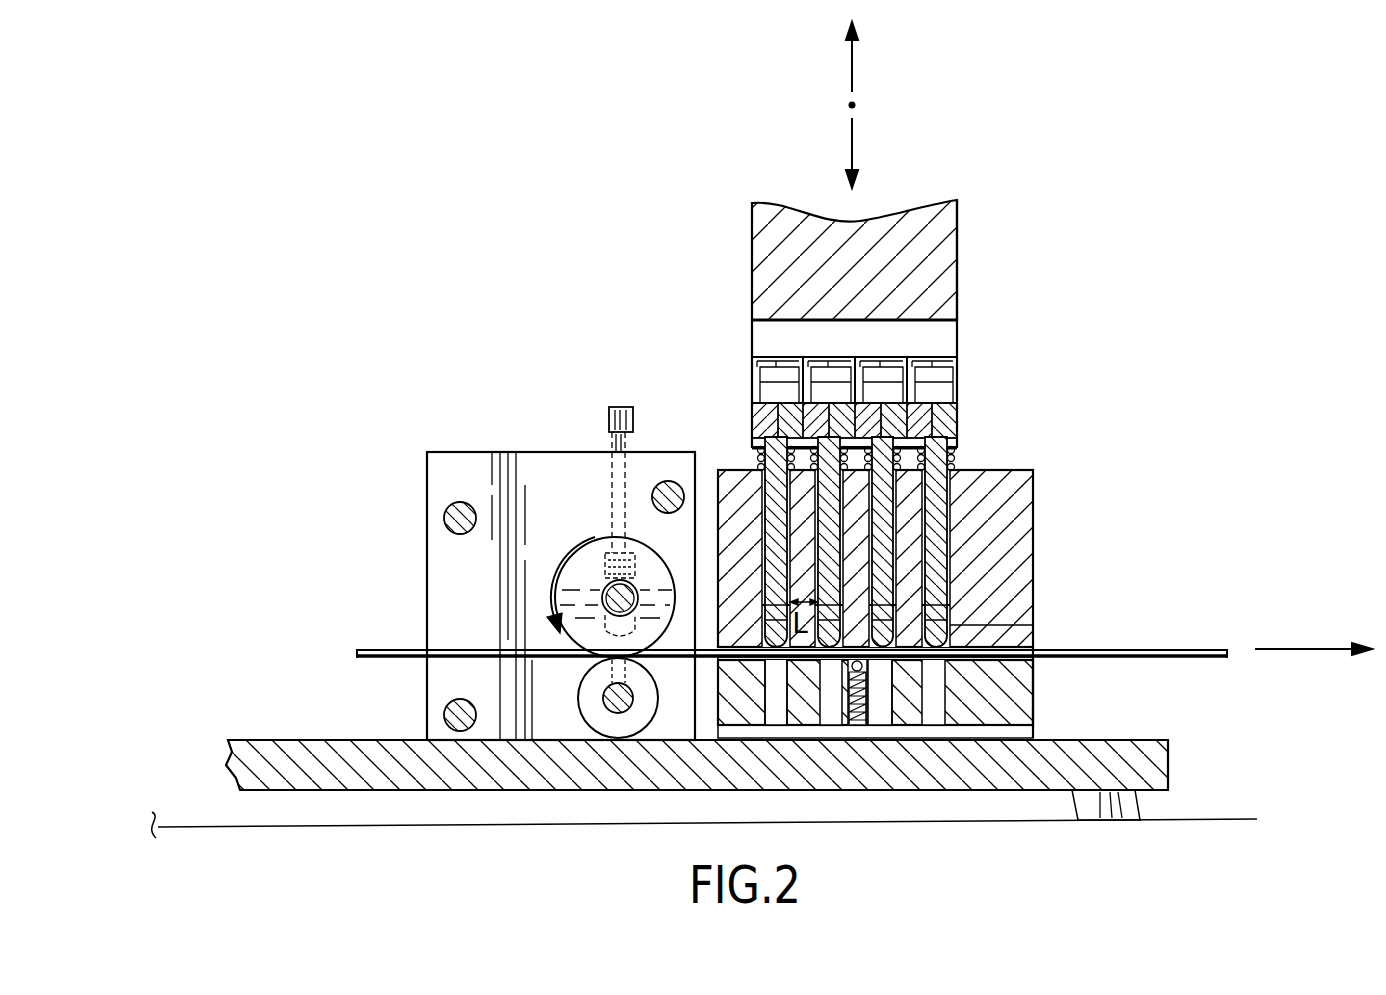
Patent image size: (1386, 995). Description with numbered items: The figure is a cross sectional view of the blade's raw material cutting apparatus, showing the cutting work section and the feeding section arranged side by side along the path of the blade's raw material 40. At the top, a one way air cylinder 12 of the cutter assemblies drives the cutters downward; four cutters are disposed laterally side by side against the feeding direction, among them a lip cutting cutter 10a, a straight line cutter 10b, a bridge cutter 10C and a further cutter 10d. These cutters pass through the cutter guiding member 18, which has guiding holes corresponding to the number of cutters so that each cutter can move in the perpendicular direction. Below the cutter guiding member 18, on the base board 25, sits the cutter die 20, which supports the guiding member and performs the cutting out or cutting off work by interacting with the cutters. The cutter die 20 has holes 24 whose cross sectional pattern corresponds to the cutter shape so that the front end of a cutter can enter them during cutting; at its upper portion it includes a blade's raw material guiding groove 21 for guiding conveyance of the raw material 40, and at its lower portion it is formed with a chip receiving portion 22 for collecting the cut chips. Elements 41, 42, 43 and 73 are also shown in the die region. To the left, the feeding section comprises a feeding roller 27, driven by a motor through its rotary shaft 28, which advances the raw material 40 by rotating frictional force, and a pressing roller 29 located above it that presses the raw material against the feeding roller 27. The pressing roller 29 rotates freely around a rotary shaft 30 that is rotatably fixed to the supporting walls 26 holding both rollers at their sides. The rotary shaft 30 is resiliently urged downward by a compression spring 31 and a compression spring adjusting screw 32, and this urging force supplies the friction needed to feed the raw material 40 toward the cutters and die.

The lip cutting cutter 10a is at (766, 470).
The straight line cutter 10b is at (833, 510).
The bridge cutter 10C is at (888, 552).
The fourth punch pin 10d is at (952, 458).
The one way air cylinder 12 is at (957, 355).
The cutter guiding member 18 is at (1034, 483).
The cutter die 20 is at (1035, 698).
The blade's raw material guiding groove 21 is at (1035, 673).
The chip receiving portion 22 is at (1035, 726).
The holes 24 is at (775, 722).
The base board 25 is at (1167, 752).
The supporting walls 26 is at (538, 458).
The feeding roller 27 is at (637, 727).
The rotary shaft 28 is at (617, 704).
The pressing roller 29 is at (590, 563).
The rotary shaft 30 is at (622, 590).
The compression spring 31 is at (608, 546).
The compression spring adjusting screw 32 is at (622, 405).
The blade's raw material 40 is at (1145, 649).
The spring 41 is at (858, 668).
The ejector pin 42 is at (868, 667).
The die edge 43 is at (958, 632).
The spring coil 73 is at (952, 515).